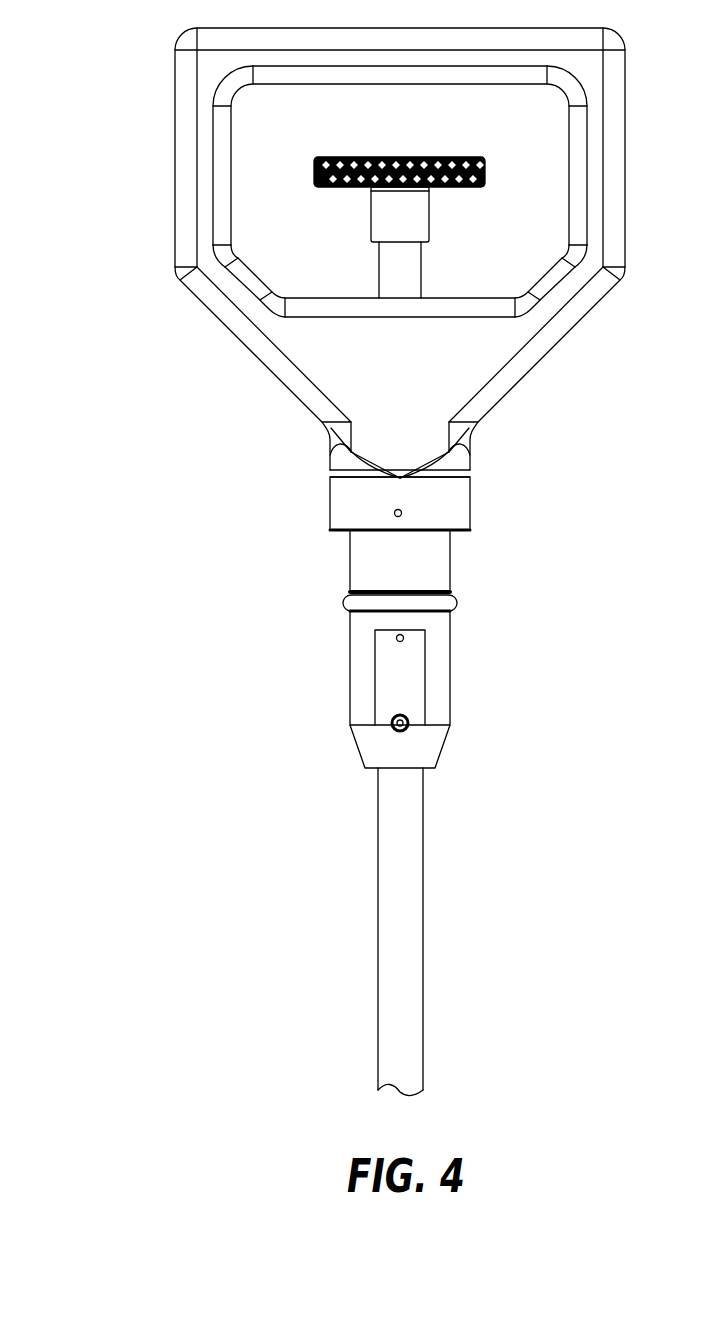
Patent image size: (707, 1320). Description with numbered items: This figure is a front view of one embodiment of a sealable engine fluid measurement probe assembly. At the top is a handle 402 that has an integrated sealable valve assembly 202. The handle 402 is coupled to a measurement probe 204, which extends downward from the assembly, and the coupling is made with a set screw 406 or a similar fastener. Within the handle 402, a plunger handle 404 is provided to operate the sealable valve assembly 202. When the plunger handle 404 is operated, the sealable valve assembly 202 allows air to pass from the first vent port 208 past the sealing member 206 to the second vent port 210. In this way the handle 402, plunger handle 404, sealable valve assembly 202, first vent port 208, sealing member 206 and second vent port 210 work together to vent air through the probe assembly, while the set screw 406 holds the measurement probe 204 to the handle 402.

The handle 402 is at (177, 40).
The plunger handle 404 is at (426, 157).
The sealable valve assembly 202 is at (303, 525).
The first vent port 208 is at (402, 512).
The sealing member 206 is at (457, 600).
The second vent port 210 is at (404, 636).
The set screw 406 is at (394, 738).
The measurement probe 204 is at (423, 915).